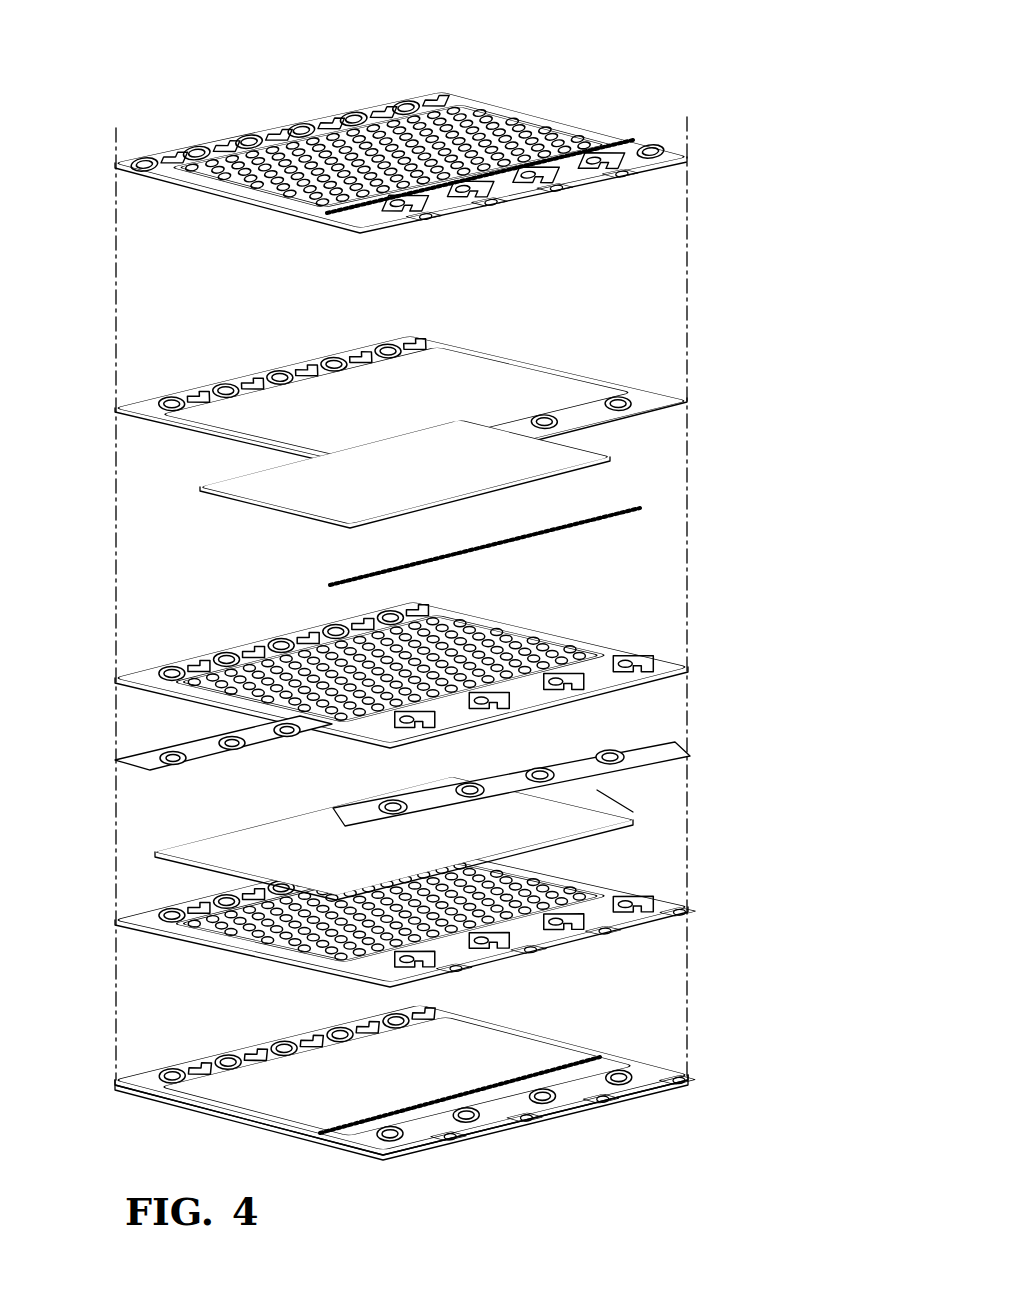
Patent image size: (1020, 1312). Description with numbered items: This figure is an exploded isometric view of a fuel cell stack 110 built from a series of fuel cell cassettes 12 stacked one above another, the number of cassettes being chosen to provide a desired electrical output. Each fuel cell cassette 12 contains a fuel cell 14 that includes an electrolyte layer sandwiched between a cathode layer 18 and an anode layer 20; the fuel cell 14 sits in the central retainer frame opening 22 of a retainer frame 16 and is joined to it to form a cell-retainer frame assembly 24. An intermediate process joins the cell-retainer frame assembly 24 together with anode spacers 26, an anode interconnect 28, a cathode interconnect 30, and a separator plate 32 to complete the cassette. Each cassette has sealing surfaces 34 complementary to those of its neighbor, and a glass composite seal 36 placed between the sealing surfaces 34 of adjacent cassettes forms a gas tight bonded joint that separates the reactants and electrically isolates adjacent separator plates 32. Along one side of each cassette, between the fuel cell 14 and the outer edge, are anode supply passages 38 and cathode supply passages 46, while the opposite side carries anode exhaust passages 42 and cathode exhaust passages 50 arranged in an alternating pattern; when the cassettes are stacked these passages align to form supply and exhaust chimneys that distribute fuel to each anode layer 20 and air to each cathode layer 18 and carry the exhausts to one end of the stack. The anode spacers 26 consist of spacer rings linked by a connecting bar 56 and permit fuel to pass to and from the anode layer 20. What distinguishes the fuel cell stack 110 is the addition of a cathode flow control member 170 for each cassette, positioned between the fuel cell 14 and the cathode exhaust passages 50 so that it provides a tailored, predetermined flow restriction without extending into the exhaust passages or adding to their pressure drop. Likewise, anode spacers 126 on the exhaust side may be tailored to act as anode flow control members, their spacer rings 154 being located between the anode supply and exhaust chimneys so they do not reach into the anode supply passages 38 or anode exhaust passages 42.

The fuel cell cassette 12 is at (667, 140).
The fuel cell 14 is at (493, 653).
The retainer frame 16 is at (273, 645).
The cathode layer 18 is at (533, 662).
The anode layer 20 is at (522, 713).
The central retainer frame opening 22 is at (437, 637).
The cell-retainer frame assembly 24 is at (645, 645).
The anode spacers 26 is at (190, 732).
The anode interconnect 28 is at (230, 837).
The cathode interconnect 30 is at (567, 457).
The separator plate 32 is at (218, 948).
The sealing surfaces 34 is at (677, 160).
The glass composite seal 36 is at (590, 378).
The anode supply passages 38 is at (168, 155).
The anode exhaust passages 42 is at (433, 223).
The cathode supply passages 46 is at (142, 160).
The cathode exhaust passages 50 is at (403, 220).
The connecting bar 56 is at (597, 777).
The fuel cell stack 110 is at (788, 113).
The anode spacers 126 is at (597, 790).
The spacer rings 154 is at (610, 757).
The cathode flow control member 170 is at (330, 213).